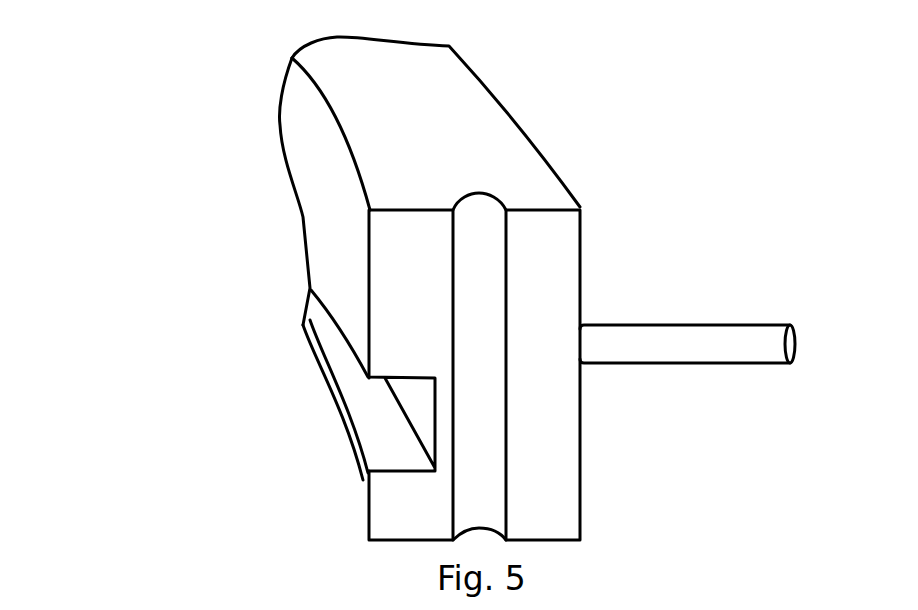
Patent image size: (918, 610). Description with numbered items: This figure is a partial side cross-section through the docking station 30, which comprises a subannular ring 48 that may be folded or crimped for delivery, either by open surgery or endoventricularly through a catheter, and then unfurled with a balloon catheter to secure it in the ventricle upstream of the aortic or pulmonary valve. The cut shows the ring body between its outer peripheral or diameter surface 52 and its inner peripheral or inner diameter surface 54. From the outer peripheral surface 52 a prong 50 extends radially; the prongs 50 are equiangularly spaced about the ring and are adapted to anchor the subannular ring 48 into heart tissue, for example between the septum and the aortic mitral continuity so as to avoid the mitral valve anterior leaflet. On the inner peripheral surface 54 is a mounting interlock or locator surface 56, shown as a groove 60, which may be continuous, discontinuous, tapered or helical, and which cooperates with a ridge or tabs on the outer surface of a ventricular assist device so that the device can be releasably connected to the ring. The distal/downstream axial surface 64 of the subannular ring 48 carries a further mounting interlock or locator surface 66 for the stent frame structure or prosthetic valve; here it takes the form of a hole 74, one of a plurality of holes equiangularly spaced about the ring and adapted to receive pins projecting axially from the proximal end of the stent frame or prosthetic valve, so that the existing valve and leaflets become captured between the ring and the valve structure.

The docking station 30 is at (171, 169).
The subannular ring 48 is at (218, 102).
The prong 50 is at (733, 350).
The outer peripheral or diameter surface 52 is at (582, 287).
The inner peripheral or inner diameter surface 54 is at (357, 273).
The mounting interlock or locator surface 56 is at (277, 388).
The groove 60 is at (385, 435).
The distal/downstream axial surface 64 is at (518, 122).
The mounting interlock or locator surface 66 is at (507, 130).
The hole 74 is at (487, 462).